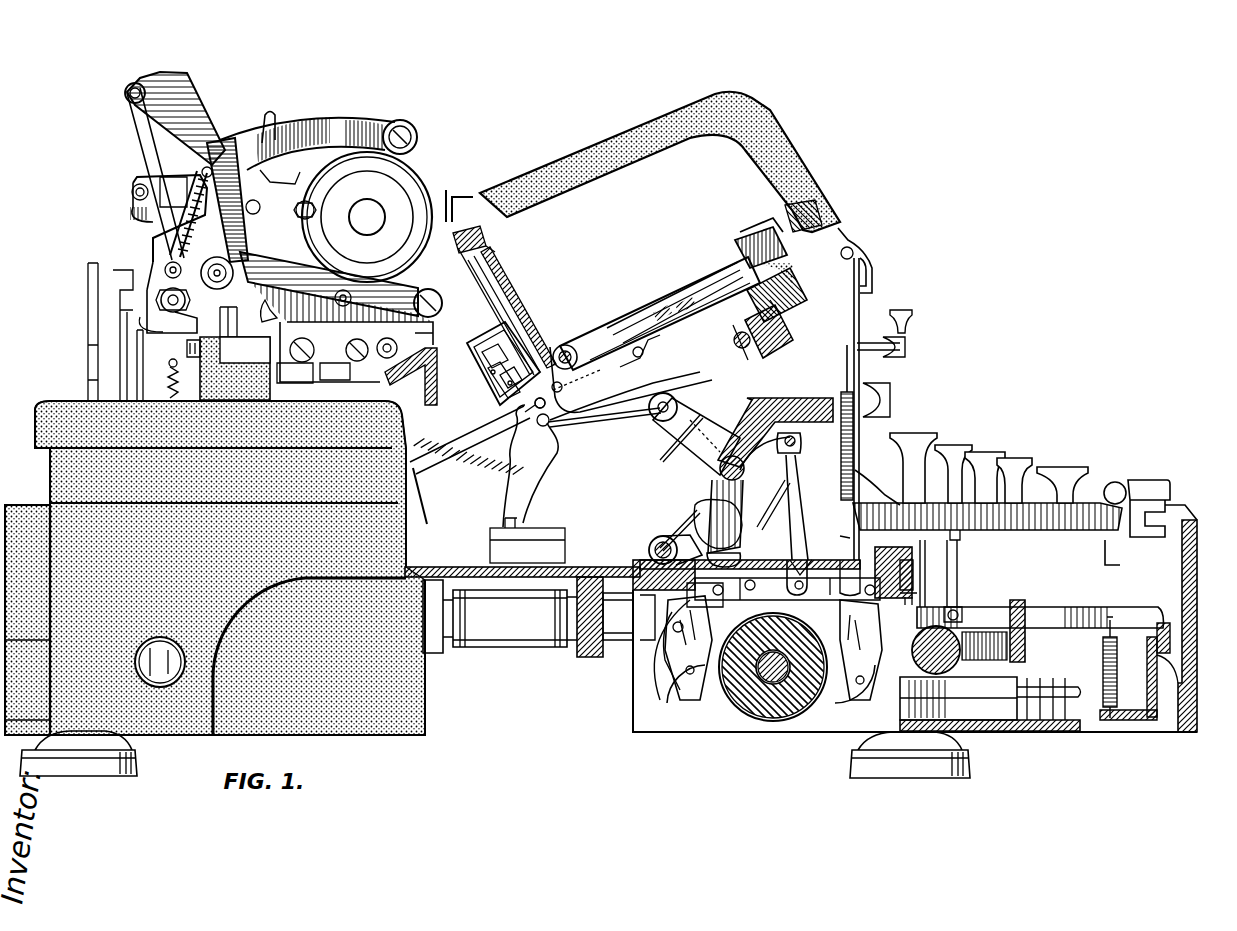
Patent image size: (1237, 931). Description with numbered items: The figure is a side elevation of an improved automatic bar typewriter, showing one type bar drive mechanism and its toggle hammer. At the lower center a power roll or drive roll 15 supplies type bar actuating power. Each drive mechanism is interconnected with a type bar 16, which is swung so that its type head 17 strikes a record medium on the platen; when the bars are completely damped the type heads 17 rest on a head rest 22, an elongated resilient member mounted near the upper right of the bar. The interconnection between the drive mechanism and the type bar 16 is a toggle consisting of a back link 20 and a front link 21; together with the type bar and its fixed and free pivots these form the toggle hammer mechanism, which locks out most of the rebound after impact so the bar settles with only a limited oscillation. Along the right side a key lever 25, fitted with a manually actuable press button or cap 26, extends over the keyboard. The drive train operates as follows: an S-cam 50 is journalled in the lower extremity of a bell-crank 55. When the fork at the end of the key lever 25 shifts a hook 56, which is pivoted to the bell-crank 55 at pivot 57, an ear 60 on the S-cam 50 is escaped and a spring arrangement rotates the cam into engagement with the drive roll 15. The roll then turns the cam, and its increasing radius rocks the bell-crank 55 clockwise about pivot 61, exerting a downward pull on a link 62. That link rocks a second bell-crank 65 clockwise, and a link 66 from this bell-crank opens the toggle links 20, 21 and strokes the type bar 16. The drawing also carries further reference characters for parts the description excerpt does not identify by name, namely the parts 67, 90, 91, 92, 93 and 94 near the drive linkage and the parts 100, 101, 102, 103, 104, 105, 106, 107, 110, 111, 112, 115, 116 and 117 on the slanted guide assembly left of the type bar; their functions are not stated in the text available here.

The drive roll 15 is at (800, 708).
The type bar 16 is at (652, 312).
The type head 17 is at (745, 240).
The back link 20 is at (617, 360).
The front link 21 is at (702, 322).
The head rest 22 is at (782, 264).
The key lever 25 is at (877, 510).
The press button or cap 26 is at (918, 440).
The S-cam 50 is at (697, 700).
The bell-crank 55 is at (838, 549).
The hook 56 is at (672, 655).
The pivot 57 is at (675, 608).
The ear 60 is at (672, 695).
The pivot 61 is at (650, 560).
The link 62 is at (777, 500).
The bell-crank 65 is at (693, 457).
The link 66 is at (625, 420).
The lever arm 67 is at (673, 533).
The actuating lever 90 is at (718, 500).
The stud 91 is at (850, 537).
The rod 92 is at (688, 513).
The stop 93 is at (803, 558).
The link 94 is at (790, 512).
The clamp block 100 is at (484, 234).
The guide bar 101 is at (497, 270).
The guide plate 102 is at (500, 330).
The spacer 103 is at (490, 252).
The bracket 104 is at (445, 205).
The contact block 105 is at (452, 392).
The contact 106 is at (490, 430).
The support 107 is at (470, 368).
The pivot pin 110 is at (535, 345).
The insulator 111 is at (493, 388).
The spring 112 is at (500, 464).
The wire 115 is at (527, 453).
The terminal box 116 is at (490, 542).
The wire 117 is at (528, 502).